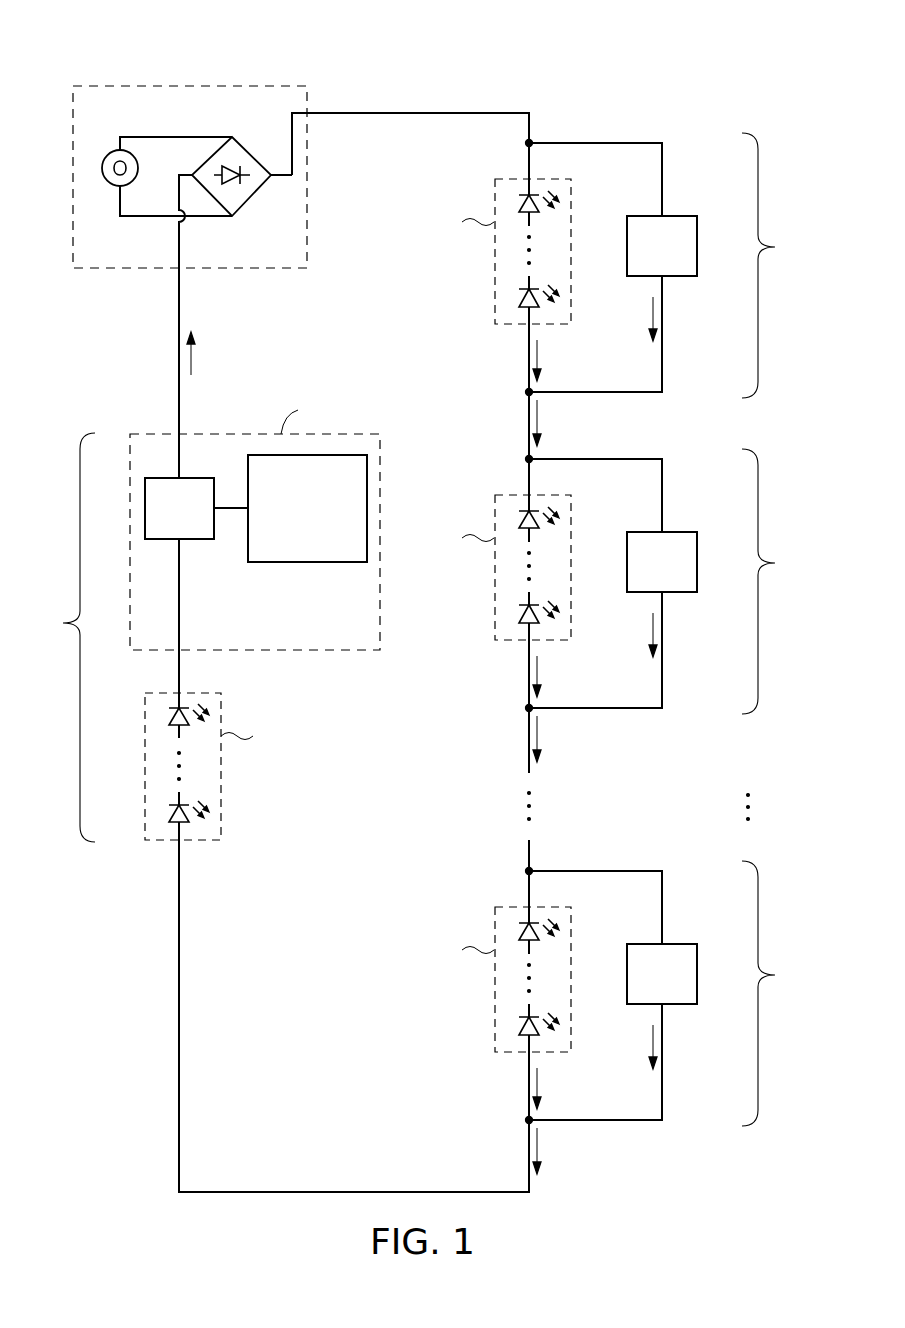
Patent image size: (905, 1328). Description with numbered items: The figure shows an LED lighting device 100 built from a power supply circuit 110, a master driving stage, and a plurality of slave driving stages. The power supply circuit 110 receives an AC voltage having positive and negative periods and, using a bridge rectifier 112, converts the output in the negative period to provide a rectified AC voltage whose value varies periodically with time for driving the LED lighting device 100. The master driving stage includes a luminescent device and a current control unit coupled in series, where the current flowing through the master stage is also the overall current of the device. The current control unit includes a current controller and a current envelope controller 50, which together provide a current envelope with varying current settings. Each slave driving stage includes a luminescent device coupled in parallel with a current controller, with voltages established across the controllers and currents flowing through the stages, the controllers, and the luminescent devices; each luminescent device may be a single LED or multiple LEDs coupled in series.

The LED lighting device 100 is at (712, 62).
The power supply circuit 110 is at (237, 86).
The bridge rectifier 112 is at (253, 155).
The current envelope controller 50 is at (307, 562).